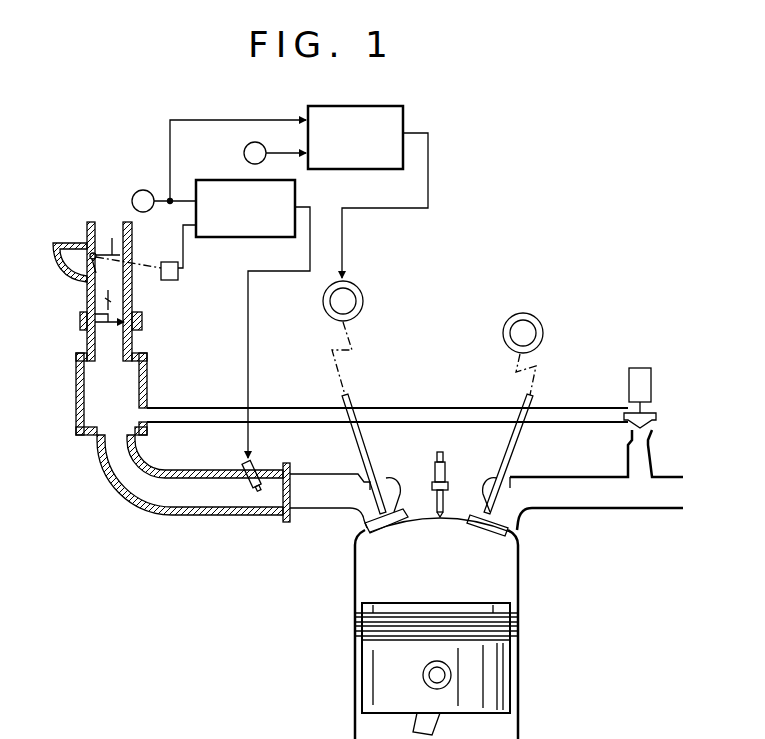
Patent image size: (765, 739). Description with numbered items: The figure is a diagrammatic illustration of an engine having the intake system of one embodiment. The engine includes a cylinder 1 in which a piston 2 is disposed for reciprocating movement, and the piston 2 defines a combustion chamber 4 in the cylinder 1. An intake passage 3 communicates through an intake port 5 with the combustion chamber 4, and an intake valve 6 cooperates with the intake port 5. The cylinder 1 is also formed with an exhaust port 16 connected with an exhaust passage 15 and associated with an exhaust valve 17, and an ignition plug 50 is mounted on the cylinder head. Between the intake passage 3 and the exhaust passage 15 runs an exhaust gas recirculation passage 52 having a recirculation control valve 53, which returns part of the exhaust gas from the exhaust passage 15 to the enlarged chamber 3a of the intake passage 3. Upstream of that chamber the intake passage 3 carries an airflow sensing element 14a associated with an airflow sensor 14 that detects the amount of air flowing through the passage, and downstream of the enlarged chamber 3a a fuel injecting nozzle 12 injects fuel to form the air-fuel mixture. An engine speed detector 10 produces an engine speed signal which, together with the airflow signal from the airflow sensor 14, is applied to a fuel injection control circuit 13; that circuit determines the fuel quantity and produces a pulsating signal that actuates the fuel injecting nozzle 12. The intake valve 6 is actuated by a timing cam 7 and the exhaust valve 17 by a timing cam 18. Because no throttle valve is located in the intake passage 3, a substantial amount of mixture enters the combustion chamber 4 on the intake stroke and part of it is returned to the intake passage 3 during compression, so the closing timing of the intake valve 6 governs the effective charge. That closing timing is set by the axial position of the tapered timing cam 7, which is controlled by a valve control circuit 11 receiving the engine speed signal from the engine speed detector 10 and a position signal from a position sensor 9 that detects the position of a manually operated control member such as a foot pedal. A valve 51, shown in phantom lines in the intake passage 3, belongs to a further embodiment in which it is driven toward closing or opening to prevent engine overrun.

The cylinder 1 is at (353, 590).
The piston 2 is at (492, 678).
The intake passage 3 is at (184, 516).
The enlarged chamber 3a is at (100, 402).
The combustion chamber 4 is at (446, 578).
The intake port 5 is at (366, 526).
The intake valve 6 is at (392, 510).
The timing cam 7 is at (364, 300).
The position sensor 9 is at (244, 154).
The engine speed detector 10 is at (144, 190).
The valve control circuit 11 is at (348, 106).
The fuel injecting nozzle 12 is at (262, 470).
The fuel injection control circuit 13 is at (232, 237).
The airflow sensor 14 is at (170, 281).
The airflow sensing element 14a is at (112, 238).
The exhaust passage 15 is at (594, 476).
The exhaust port 16 is at (500, 522).
The exhaust valve 17 is at (480, 510).
The timing cam 18 is at (544, 340).
The ignition plug 50 is at (432, 462).
The valve 51 is at (96, 312).
The exhaust gas recirculation passage 52 is at (208, 407).
The recirculation control valve 53 is at (656, 418).